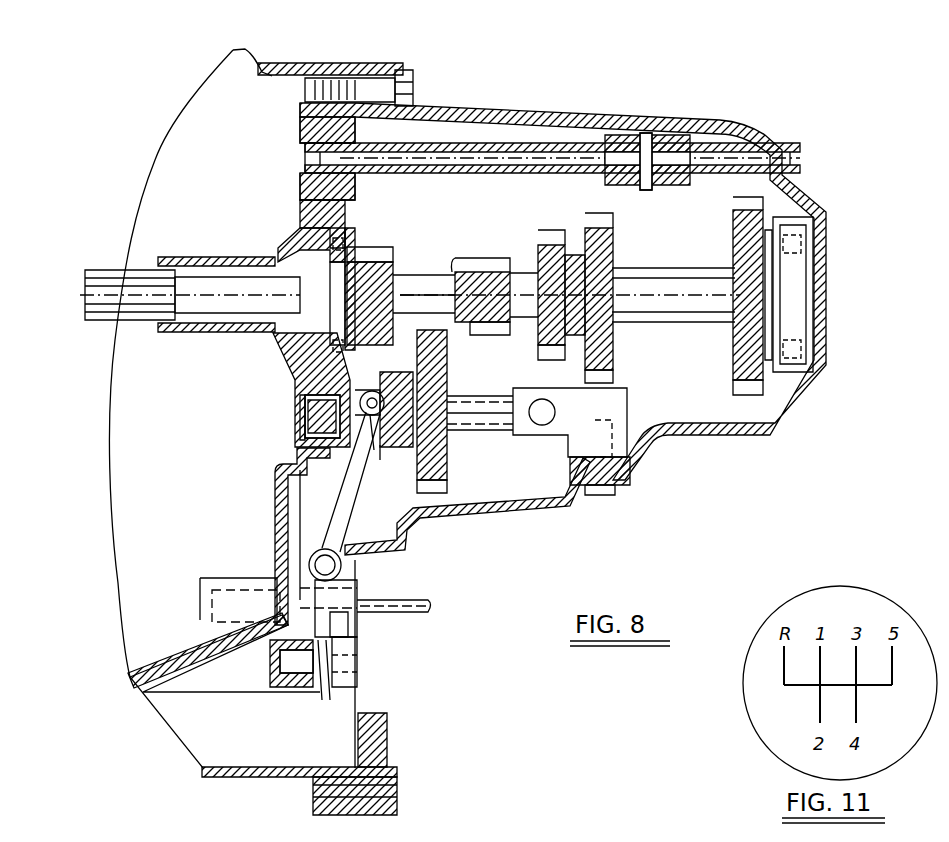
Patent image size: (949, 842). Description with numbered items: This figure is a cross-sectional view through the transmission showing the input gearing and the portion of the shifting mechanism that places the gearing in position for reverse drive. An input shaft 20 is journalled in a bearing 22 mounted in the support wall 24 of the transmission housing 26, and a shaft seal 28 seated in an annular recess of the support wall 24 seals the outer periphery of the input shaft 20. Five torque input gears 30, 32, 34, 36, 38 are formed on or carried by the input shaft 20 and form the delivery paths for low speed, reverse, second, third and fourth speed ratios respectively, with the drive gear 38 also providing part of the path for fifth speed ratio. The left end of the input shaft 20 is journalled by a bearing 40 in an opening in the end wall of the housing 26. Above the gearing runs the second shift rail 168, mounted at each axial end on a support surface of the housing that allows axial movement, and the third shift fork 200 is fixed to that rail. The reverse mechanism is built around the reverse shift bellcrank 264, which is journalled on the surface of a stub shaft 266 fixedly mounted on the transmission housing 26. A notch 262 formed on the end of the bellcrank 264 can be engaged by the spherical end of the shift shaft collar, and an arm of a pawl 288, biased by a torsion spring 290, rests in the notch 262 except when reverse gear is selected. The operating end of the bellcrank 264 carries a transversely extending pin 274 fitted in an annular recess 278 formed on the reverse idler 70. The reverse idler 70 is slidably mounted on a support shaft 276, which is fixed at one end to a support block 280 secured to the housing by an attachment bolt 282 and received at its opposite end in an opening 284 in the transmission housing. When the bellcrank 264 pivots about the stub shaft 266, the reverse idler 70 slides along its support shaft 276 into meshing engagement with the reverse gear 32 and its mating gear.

The input shaft 20 is at (103, 268).
The bearing 22 is at (337, 242).
The support wall 24 is at (322, 194).
The transmission housing 26 is at (742, 422).
The shaft seal 28 is at (300, 355).
The torque input gear 30 is at (382, 262).
The torque input gear 32 is at (481, 262).
The torque input gear 34 is at (543, 230).
The torque input gear 36 is at (598, 216).
The drive gear 38 is at (745, 200).
The bearing 40 is at (792, 300).
The reverse idler 70 is at (440, 360).
The second shift rail 168 is at (462, 172).
The third shift fork 200 is at (670, 140).
The notch 262 is at (360, 635).
The reverse shift bellcrank 264 is at (288, 522).
The stub shaft 266 is at (330, 565).
The pin 274 is at (385, 447).
The support shaft 276 is at (495, 396).
The annular recess 278 is at (374, 390).
The support block 280 is at (612, 410).
The attachment bolt 282 is at (605, 495).
The opening 284 is at (305, 418).
The pawl 288 is at (358, 683).
The torsion spring 290 is at (322, 703).